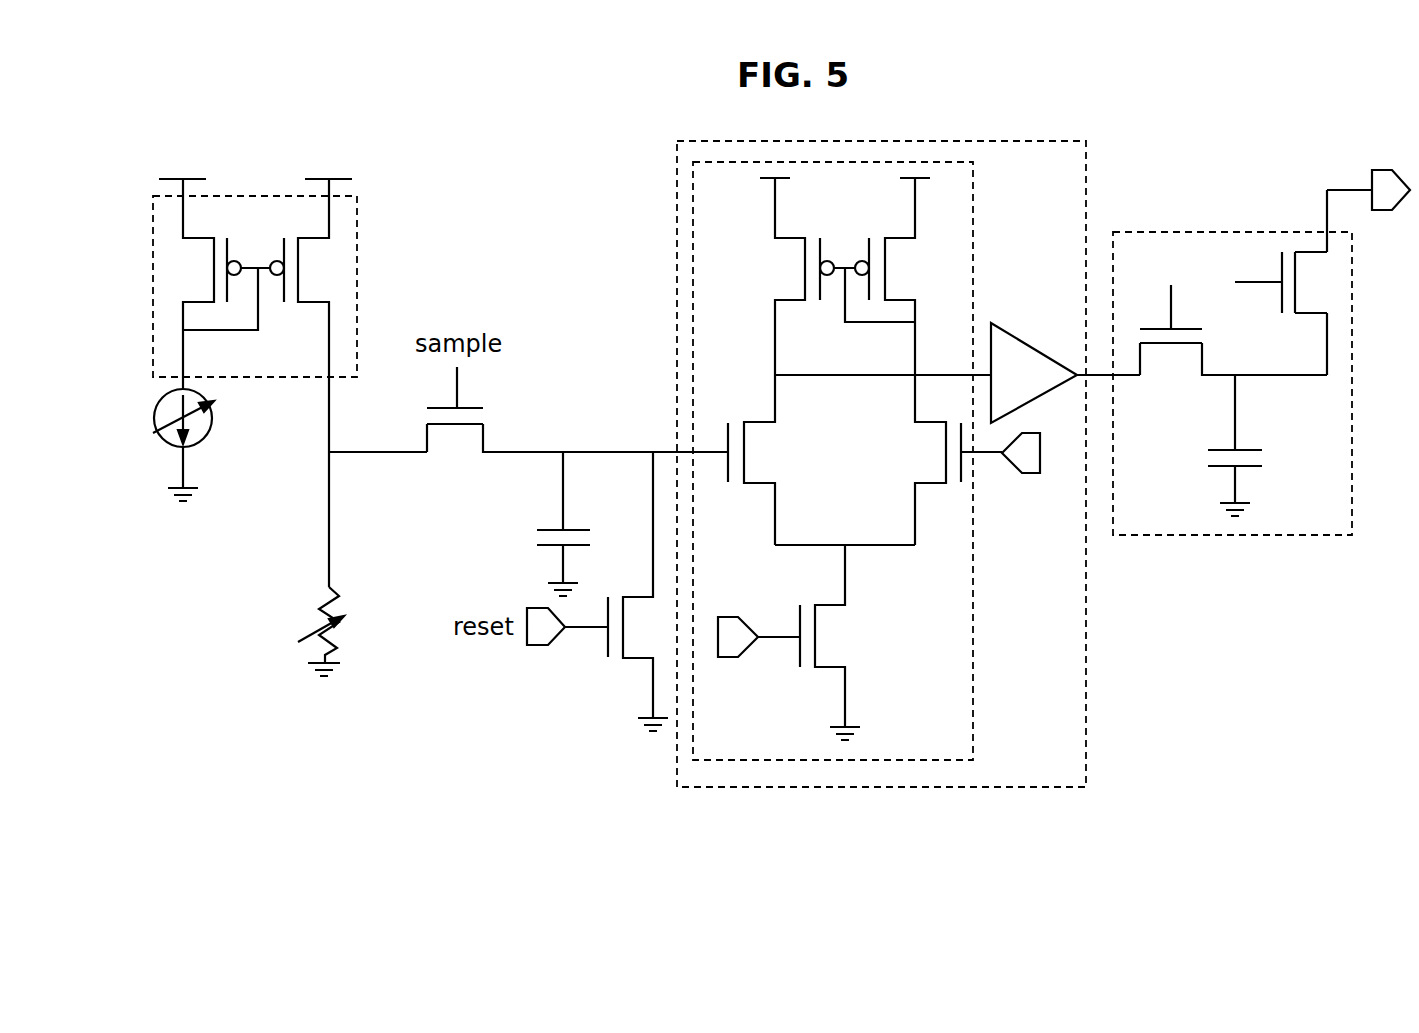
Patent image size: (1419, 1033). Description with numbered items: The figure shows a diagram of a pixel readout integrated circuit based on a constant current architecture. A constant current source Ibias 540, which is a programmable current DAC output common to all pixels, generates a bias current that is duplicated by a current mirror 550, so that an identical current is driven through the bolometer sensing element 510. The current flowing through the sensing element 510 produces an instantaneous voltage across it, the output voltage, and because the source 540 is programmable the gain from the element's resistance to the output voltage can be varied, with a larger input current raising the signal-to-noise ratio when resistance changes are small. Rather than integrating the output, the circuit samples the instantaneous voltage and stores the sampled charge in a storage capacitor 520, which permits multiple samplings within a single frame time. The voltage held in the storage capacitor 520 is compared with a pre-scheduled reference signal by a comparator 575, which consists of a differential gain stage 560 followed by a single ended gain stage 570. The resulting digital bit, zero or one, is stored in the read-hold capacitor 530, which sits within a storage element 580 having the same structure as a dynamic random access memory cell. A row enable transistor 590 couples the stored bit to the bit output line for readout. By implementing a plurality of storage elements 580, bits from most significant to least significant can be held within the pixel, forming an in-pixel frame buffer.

The bolometer sensing element 510 is at (333, 632).
The storage capacitor Cstore 520 is at (537, 537).
The Cread_hold capacitor 530 is at (1260, 460).
The constant current source Ibias 540 is at (200, 448).
The current mirror 550 is at (357, 196).
The differential gain stage 560 is at (972, 665).
The single ended gain stage 570 is at (1073, 368).
The comparator 575 is at (1086, 141).
The storage element 580 is at (1238, 394).
The row enable transistor 590 is at (1287, 250).